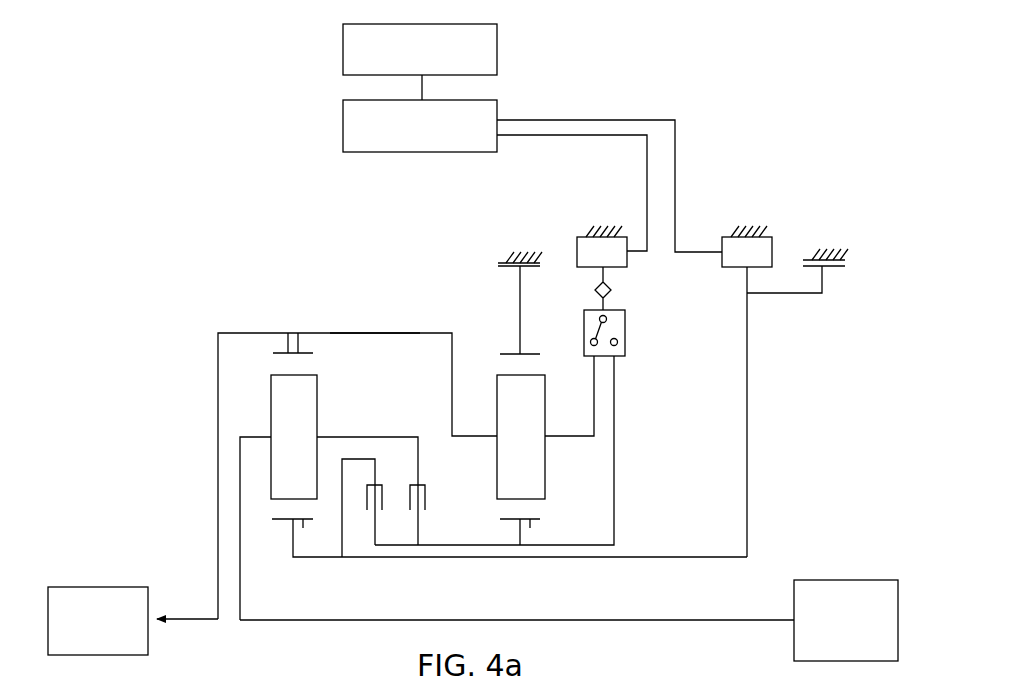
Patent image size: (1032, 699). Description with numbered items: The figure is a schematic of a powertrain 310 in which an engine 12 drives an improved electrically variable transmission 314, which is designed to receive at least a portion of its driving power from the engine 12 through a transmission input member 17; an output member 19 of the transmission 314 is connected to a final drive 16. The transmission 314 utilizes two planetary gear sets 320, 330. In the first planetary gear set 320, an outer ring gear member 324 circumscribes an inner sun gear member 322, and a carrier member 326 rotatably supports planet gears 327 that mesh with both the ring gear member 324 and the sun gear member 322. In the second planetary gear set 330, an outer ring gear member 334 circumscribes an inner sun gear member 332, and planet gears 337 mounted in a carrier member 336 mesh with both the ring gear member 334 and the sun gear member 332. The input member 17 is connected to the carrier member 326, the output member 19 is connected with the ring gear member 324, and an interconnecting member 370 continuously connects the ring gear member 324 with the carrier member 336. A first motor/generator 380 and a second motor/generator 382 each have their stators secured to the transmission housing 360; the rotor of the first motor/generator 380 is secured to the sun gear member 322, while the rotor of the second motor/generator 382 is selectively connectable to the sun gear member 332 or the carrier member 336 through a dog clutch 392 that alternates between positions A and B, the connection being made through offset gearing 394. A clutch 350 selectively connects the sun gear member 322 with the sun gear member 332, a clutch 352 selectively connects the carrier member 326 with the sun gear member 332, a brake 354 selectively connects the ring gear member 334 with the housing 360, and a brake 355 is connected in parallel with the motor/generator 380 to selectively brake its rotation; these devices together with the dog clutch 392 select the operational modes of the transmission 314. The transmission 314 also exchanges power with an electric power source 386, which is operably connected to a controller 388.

The electric power source 386 is at (343, 48).
The controller 388 is at (343, 124).
The second motor/generator 382 is at (575, 236).
The first motor/generator 380 is at (721, 236).
The transmission housing 360 is at (590, 228).
The brake 355 is at (848, 264).
The brake 354 is at (496, 261).
The ring gear member 334 is at (512, 352).
The offset gearing 394 is at (614, 290).
The dog clutch 392 is at (626, 345).
The electrically variable transmission 314 is at (334, 285).
The interconnecting member 370 is at (375, 333).
The ring gear member 324 is at (282, 352).
The powertrain 310 is at (146, 383).
The carrier member 326 is at (260, 428).
The planet gears 327 is at (294, 418).
The carrier member 336 is at (490, 448).
The planet gears 337 is at (521, 418).
The clutch 350 is at (378, 512).
The clutch 352 is at (422, 512).
The first planetary gear set 320 is at (290, 527).
The sun gear member 322 is at (305, 525).
The second planetary gear set 330 is at (518, 527).
The sun gear member 332 is at (533, 525).
The final drive 16 is at (112, 574).
The output member 19 is at (188, 623).
The engine 12 is at (825, 562).
The transmission input member 17 is at (757, 623).